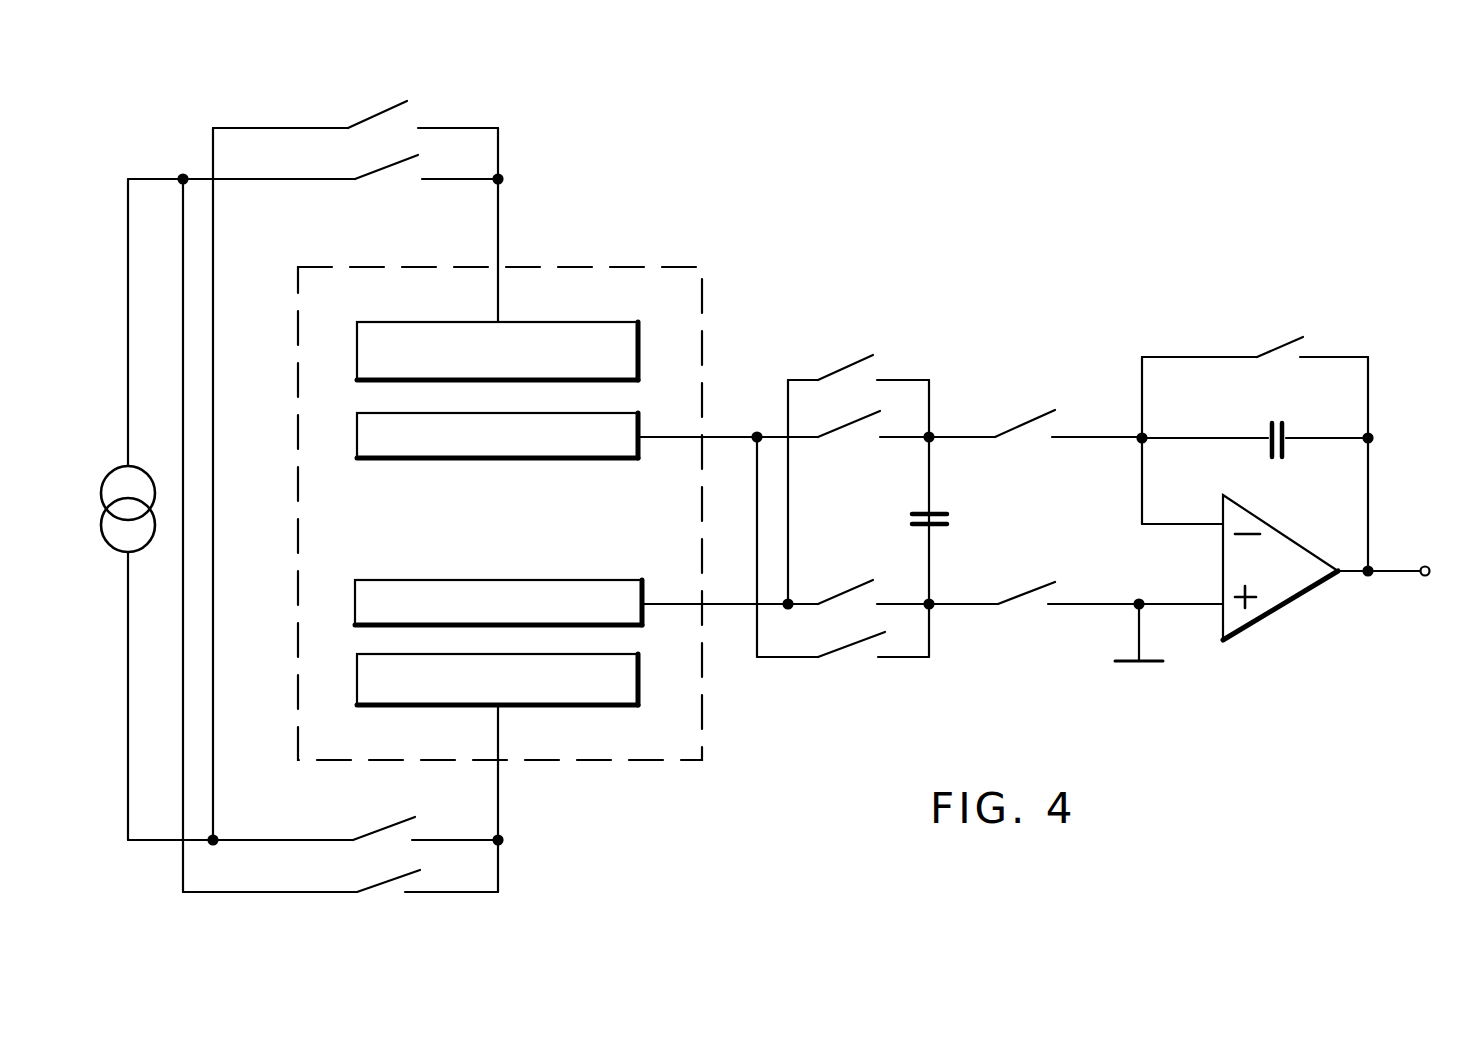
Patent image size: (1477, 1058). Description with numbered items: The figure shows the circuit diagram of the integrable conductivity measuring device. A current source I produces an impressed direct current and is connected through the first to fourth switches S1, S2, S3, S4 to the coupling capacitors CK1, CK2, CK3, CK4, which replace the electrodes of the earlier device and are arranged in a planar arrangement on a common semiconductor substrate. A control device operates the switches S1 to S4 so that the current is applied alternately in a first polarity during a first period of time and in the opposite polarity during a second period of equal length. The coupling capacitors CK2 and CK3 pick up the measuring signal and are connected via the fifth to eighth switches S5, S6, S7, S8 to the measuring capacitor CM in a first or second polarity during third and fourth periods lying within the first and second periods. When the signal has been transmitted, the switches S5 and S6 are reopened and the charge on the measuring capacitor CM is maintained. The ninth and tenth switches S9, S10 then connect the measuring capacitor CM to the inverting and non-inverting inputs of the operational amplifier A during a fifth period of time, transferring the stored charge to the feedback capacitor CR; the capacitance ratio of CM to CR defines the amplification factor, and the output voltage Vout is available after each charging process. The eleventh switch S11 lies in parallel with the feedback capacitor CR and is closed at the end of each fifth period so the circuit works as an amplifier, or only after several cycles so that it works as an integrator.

The current source I is at (128, 509).
The first switch S1 is at (390, 164).
The second switch S2 is at (393, 821).
The third switch S3 is at (355, 110).
The fourth switch S4 is at (340, 876).
The fifth switch S5 is at (867, 441).
The sixth switch S6 is at (871, 575).
The seventh switch S7 is at (858, 346).
The eighth switch S8 is at (843, 663).
The ninth switch S9 is at (1035, 408).
The tenth switch S10 is at (1076, 613).
The eleventh switch S11 is at (1255, 332).
The coupling capacitor CK1 is at (497, 351).
The coupling capacitor CK2 is at (497, 435).
The coupling capacitor CK3 is at (498, 602).
The coupling capacitor CK4 is at (497, 679).
The measuring capacitor CM is at (955, 522).
The feedback capacitor CR is at (1255, 453).
The operational amplifier A is at (1280, 567).
The output voltage Vout is at (1395, 593).